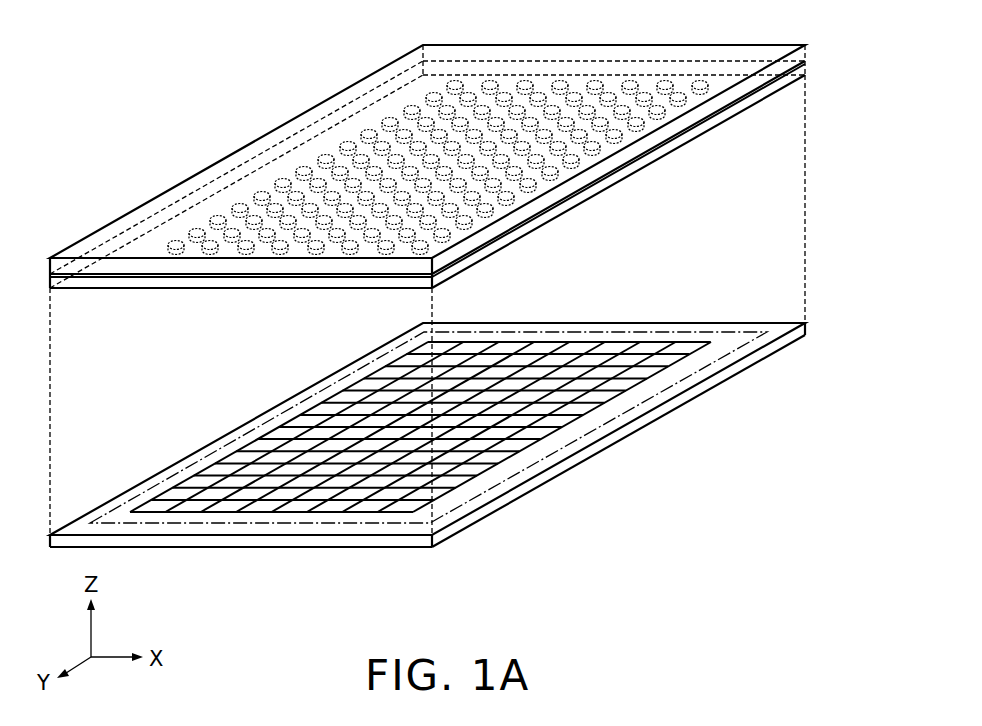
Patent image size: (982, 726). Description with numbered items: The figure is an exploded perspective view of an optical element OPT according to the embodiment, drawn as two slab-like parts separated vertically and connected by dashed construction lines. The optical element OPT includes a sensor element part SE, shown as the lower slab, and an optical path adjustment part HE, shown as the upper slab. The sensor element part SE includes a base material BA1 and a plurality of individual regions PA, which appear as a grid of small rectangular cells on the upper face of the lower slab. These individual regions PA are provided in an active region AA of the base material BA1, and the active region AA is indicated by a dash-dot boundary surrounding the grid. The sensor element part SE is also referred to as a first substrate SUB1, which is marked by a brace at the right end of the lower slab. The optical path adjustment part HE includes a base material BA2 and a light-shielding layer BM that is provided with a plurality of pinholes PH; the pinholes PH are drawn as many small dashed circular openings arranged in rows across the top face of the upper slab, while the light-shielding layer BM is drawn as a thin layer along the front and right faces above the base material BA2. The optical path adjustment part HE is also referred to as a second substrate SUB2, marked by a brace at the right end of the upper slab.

The optical element OPT is at (224, 70).
The pinholes PH is at (597, 80).
The second substrate SUB2 is at (812, 45).
The optical path adjustment part HE is at (157, 190).
The light-shielding layer BM is at (642, 160).
The base material BA2 is at (577, 184).
The active region AA is at (585, 332).
The first substrate SUB1 is at (812, 322).
The individual regions PA is at (346, 403).
The sensor element part SE is at (201, 406).
The base material BA1 is at (480, 511).